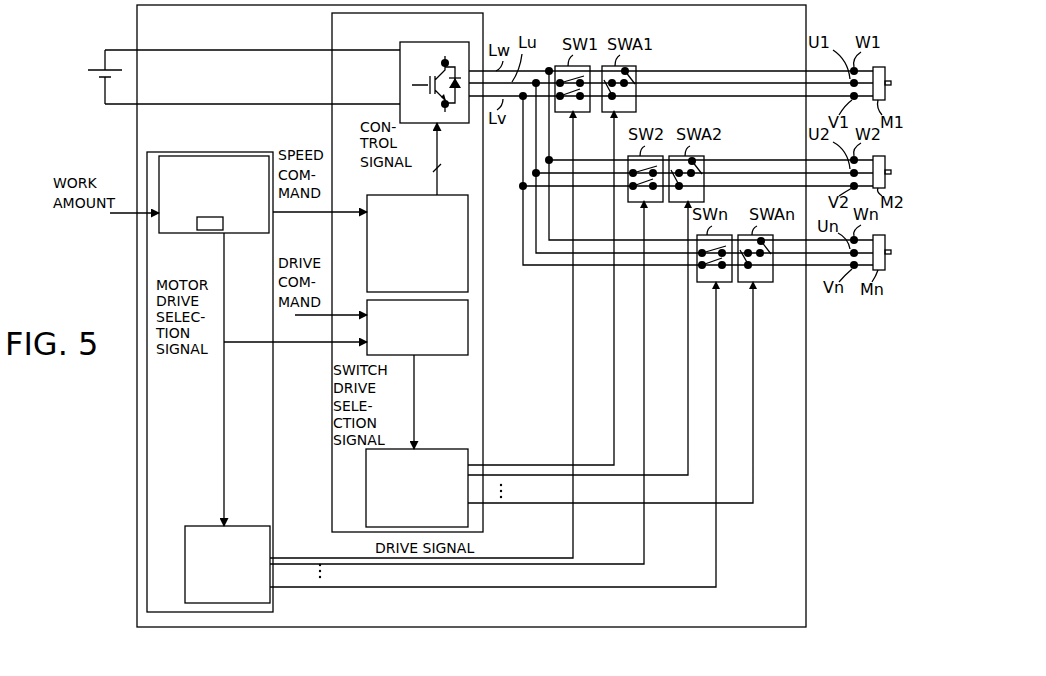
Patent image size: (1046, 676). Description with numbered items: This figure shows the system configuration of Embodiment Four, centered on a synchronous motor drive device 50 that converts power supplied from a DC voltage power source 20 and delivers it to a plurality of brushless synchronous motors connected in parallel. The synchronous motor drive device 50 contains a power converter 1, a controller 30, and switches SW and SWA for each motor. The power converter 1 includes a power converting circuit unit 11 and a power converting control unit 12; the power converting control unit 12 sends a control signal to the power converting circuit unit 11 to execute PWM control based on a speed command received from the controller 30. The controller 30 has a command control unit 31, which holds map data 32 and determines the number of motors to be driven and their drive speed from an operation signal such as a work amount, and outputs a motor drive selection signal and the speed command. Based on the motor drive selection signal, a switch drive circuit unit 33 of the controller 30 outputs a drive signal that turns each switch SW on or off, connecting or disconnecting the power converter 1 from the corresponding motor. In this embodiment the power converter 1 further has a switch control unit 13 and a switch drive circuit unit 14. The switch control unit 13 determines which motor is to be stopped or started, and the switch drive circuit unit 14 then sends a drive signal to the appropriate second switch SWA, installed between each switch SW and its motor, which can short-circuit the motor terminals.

The power converter 1 is at (484, 31).
The power converting circuit unit 11 is at (431, 30).
The power converting control unit 12 is at (423, 194).
The switch control unit 13 is at (366, 300).
The switch drive circuit unit 14 is at (432, 449).
The DC voltage power source 20 is at (92, 69).
The controller 30 is at (222, 152).
The command control unit 31 is at (268, 236).
The map data 32 is at (223, 219).
The switch drive circuit unit 33 is at (193, 513).
The synchronous motor drive device 50 is at (717, 628).